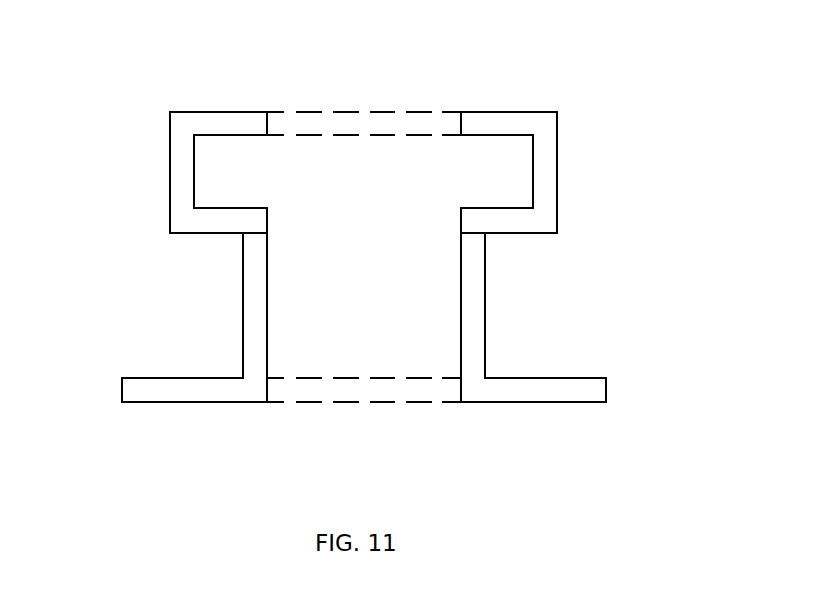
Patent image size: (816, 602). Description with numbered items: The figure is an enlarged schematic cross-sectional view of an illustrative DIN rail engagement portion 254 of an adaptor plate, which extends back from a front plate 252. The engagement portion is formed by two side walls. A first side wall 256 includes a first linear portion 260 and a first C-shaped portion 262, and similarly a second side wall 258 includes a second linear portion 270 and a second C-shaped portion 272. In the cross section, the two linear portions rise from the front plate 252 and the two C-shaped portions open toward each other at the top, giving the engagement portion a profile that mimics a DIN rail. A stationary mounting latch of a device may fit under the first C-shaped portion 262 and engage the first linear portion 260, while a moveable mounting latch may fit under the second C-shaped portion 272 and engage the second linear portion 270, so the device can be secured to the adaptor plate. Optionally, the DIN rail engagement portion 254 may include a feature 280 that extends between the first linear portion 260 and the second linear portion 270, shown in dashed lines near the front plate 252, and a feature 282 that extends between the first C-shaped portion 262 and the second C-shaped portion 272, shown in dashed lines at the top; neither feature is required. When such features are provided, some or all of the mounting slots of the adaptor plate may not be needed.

The front plate 252 is at (194, 402).
The DIN rail engagement portion 254 is at (620, 80).
The first side wall 256 is at (118, 195).
The second side wall 258 is at (627, 263).
The first linear portion 260 is at (262, 305).
The first C-shaped portion 262 is at (211, 155).
The second linear portion 270 is at (479, 307).
The second C-shaped portion 272 is at (557, 172).
The feature extending between linear portions 280 is at (387, 393).
The feature extending between C-shaped portions 282 is at (382, 118).